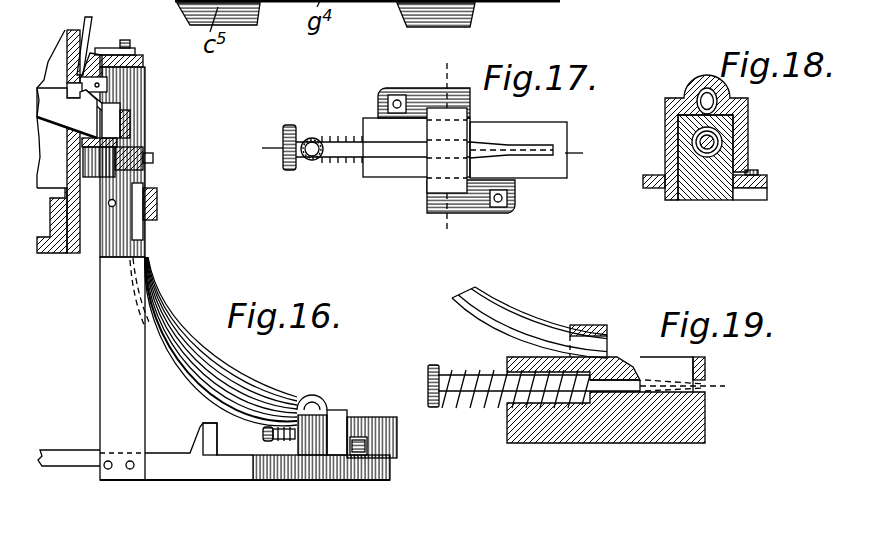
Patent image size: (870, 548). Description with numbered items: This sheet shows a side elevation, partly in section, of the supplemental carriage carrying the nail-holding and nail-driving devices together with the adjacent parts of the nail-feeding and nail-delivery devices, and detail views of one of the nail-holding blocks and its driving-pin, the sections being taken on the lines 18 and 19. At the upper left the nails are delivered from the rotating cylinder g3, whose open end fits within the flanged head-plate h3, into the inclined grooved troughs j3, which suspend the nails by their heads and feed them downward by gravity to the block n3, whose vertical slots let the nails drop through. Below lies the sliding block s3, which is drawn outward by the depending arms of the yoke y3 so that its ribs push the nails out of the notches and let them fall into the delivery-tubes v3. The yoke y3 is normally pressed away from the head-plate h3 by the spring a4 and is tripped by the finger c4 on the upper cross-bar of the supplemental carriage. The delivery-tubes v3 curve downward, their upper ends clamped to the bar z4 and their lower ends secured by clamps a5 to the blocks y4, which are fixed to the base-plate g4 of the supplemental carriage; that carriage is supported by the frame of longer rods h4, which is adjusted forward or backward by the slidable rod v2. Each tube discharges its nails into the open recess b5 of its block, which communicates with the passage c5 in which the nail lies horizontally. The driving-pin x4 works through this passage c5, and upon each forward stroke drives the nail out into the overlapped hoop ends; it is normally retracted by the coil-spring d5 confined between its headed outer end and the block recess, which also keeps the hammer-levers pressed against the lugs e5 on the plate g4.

In FIG. 16, the spring a4 is at (85, 22).
In FIG. 16, the finger c4 is at (100, 57).
In FIG. 16, the yoke y3 is at (112, 103).
In FIG. 16, the block n3 is at (125, 125).
In FIG. 16, the sliding block s3 is at (148, 170).
In FIG. 16, the bar z4 is at (157, 203).
In FIG. 16, the delivery-tubes v3 is at (145, 233).
In FIG. 19, the delivery-tubes v3 is at (497, 313).
In FIG. 16, the flanged head-plate h3 is at (80, 225).
In FIG. 16, the cylinder g3 is at (53, 223).
In FIG. 16, the grooved rails or troughs j3 is at (60, 110).
In FIG. 16, the rods h4 is at (60, 450).
In FIG. 16, the lugs e5 is at (190, 443).
In FIG. 16, the base-plate g4 is at (213, 465).
In FIG. 16, the nail-driving pins x4 is at (272, 442).
In FIG. 17, the nail-driving pins x4 is at (290, 137).
In FIG. 18, the nail-driving pins x4 is at (720, 146).
In FIG. 19, the nail-driving pins x4 is at (432, 367).
In FIG. 16, the clamps a5 is at (315, 388).
In FIG. 17, the clamps a5 is at (460, 120).
In FIG. 18, the clamps a5 is at (740, 108).
In FIG. 19, the clamps a5 is at (589, 325).
In FIG. 16, the blocks y4 is at (370, 420).
In FIG. 17, the blocks y4 is at (532, 127).
In FIG. 18, the blocks y4 is at (712, 207).
In FIG. 19, the blocks y4 is at (580, 443).
In FIG. 17, the slidable rod v2 is at (347, 147).
In FIG. 18, the slidable rod v2 is at (697, 90).
In FIG. 17, the coil-spring d5 is at (340, 162).
In FIG. 18, the coil-spring d5 is at (717, 138).
In FIG. 19, the coil-spring d5 is at (492, 400).
In FIG. 17, the passage c5 is at (553, 148).
In FIG. 19, the passage c5 is at (705, 386).
In FIG. 19, the open recess b5 is at (647, 370).
In FIG. 17, the section line 18- 18 is at (444, 153).
In FIG. 17, the section line 19- 19 is at (418, 153).